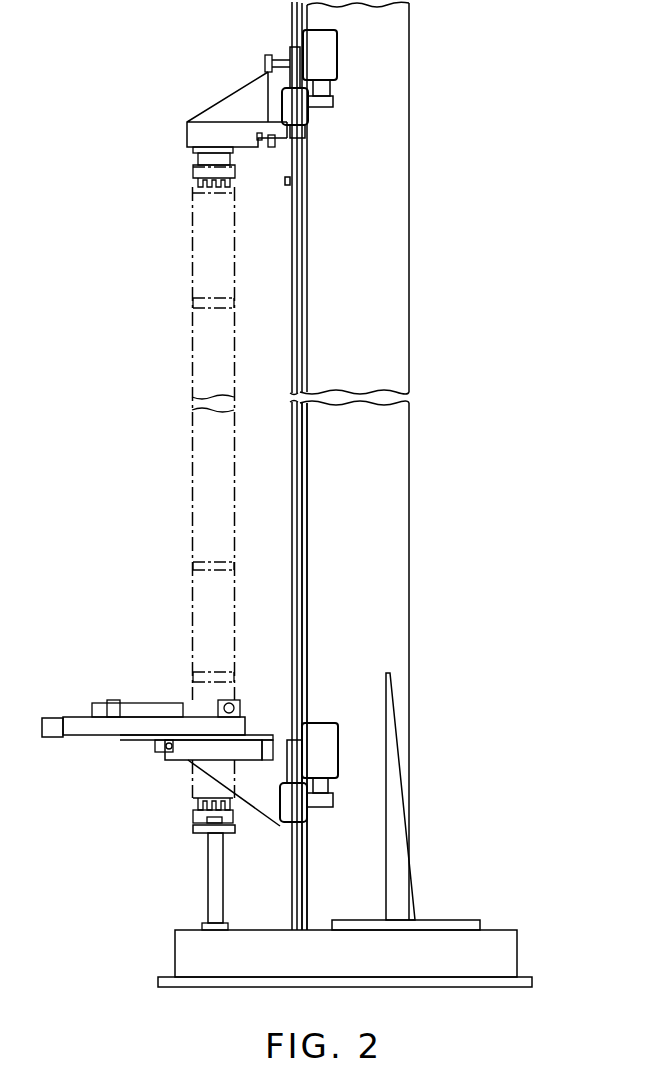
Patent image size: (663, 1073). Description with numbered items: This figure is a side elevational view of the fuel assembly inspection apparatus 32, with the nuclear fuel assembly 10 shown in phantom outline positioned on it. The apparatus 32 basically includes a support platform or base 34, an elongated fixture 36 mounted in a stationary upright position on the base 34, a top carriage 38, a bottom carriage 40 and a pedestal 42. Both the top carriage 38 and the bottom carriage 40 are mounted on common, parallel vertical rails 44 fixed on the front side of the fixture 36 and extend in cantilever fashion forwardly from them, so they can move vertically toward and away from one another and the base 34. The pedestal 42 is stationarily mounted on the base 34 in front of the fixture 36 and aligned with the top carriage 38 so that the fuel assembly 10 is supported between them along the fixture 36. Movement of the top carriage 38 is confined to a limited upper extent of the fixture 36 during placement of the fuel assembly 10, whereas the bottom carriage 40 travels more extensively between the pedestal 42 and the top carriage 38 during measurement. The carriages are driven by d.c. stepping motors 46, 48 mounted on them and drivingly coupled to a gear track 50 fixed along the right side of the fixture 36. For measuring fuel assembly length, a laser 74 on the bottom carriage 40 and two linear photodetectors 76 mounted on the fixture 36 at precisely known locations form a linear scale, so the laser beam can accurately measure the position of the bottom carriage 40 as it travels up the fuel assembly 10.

The nuclear fuel assembly 10 is at (192, 487).
The fuel assembly inspection apparatus 32 is at (432, 72).
The base 34 is at (517, 957).
The fixture 36 is at (397, 257).
The top carriage 38 is at (232, 104).
The bottom carriage 40 is at (218, 775).
The pedestal 42 is at (208, 885).
The vertical rails 44 is at (301, 513).
The d.c. stepping motor 46 is at (297, 107).
The d.c. stepping motor 48 is at (233, 795).
The gear track 50 is at (301, 552).
The laser 74 is at (262, 732).
The linear photodetectors 76 is at (290, 181).